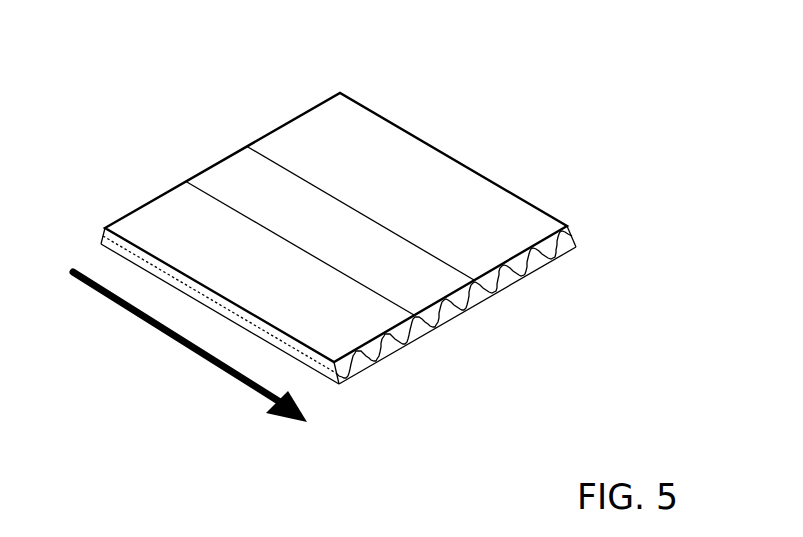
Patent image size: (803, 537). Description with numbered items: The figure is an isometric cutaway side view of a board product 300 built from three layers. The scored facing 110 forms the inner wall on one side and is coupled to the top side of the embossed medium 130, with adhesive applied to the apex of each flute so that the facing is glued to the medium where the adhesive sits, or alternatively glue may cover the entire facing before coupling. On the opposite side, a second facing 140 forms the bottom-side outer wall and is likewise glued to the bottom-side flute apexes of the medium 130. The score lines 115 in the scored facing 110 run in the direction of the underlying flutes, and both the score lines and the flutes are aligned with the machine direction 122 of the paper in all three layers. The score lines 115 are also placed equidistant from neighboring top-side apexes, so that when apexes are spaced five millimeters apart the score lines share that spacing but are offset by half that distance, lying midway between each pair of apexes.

The board product 300 is at (400, 247).
The scored facing 110 is at (250, 68).
The score lines 115 is at (417, 257).
The medium 130 is at (570, 241).
The second facing 140 is at (545, 271).
The machine direction 122 is at (170, 360).